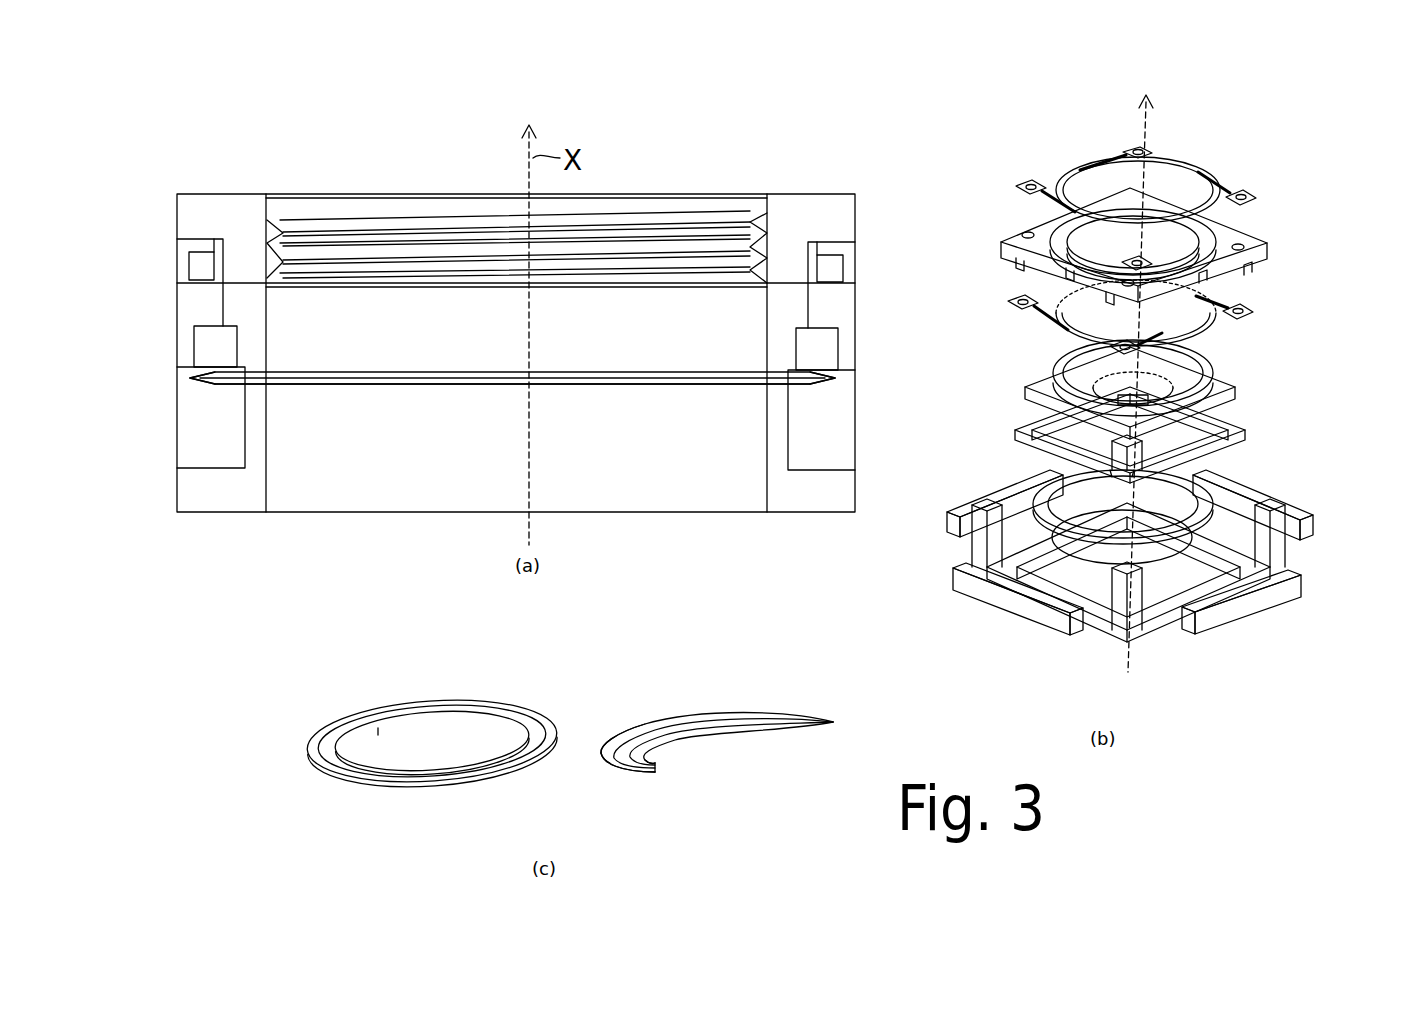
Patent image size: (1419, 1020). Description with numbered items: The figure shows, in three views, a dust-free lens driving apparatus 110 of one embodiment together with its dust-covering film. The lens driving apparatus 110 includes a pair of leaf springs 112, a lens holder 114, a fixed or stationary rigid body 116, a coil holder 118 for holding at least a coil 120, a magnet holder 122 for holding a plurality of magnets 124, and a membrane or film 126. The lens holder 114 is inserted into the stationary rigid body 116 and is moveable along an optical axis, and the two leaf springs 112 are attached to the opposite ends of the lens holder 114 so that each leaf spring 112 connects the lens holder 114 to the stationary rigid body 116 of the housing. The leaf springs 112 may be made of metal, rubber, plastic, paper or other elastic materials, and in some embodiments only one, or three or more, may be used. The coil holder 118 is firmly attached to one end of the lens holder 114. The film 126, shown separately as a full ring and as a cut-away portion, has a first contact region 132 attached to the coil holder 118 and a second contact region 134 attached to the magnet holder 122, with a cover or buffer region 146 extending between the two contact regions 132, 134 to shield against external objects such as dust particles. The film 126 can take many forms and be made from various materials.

The lens driving apparatus 110 is at (696, 123).
The leaf springs 112 is at (238, 194).
The lens holder 114 is at (808, 212).
The stationary rigid body 116 is at (858, 264).
The coil holder 118 is at (803, 308).
The coil 120 is at (830, 348).
The magnet holder 122 is at (818, 497).
The magnets 124 is at (835, 412).
The film 126 is at (645, 386).
The first contact region 132 is at (806, 369).
The second contact region 134 is at (800, 388).
The buffer region 146 is at (835, 374).